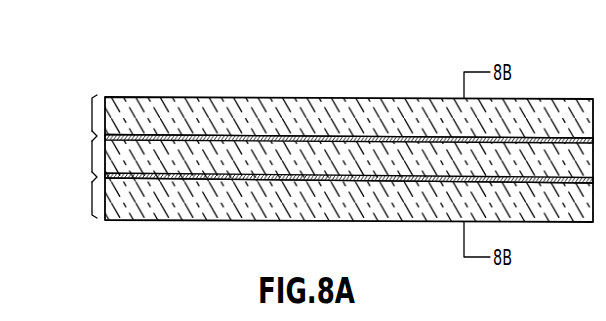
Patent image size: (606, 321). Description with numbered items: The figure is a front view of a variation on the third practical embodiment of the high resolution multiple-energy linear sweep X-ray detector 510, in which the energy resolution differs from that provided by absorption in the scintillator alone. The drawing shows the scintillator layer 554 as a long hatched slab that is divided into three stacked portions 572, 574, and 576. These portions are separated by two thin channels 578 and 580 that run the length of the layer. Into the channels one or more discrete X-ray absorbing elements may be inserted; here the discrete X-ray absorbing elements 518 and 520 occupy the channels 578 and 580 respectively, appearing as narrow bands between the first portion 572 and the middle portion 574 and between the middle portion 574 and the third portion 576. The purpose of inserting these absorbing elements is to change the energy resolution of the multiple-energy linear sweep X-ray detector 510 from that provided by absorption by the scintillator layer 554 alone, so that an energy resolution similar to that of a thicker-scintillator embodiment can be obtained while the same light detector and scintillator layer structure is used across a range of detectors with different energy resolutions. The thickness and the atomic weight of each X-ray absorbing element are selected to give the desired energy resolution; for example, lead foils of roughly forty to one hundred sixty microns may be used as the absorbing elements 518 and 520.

The multiple-energy linear sweep X-ray detector 510 is at (222, 73).
The scintillator layer 554 is at (255, 107).
The portion of the scintillator layer 572 is at (92, 117).
The discrete X-ray absorbing element 518 is at (105, 137).
The portion of the scintillator layer 574 is at (92, 158).
The discrete X-ray absorbing element 520 is at (105, 176).
The portion of the scintillator layer 576 is at (92, 198).
The channel 578 is at (137, 134).
The channel 580 is at (133, 181).